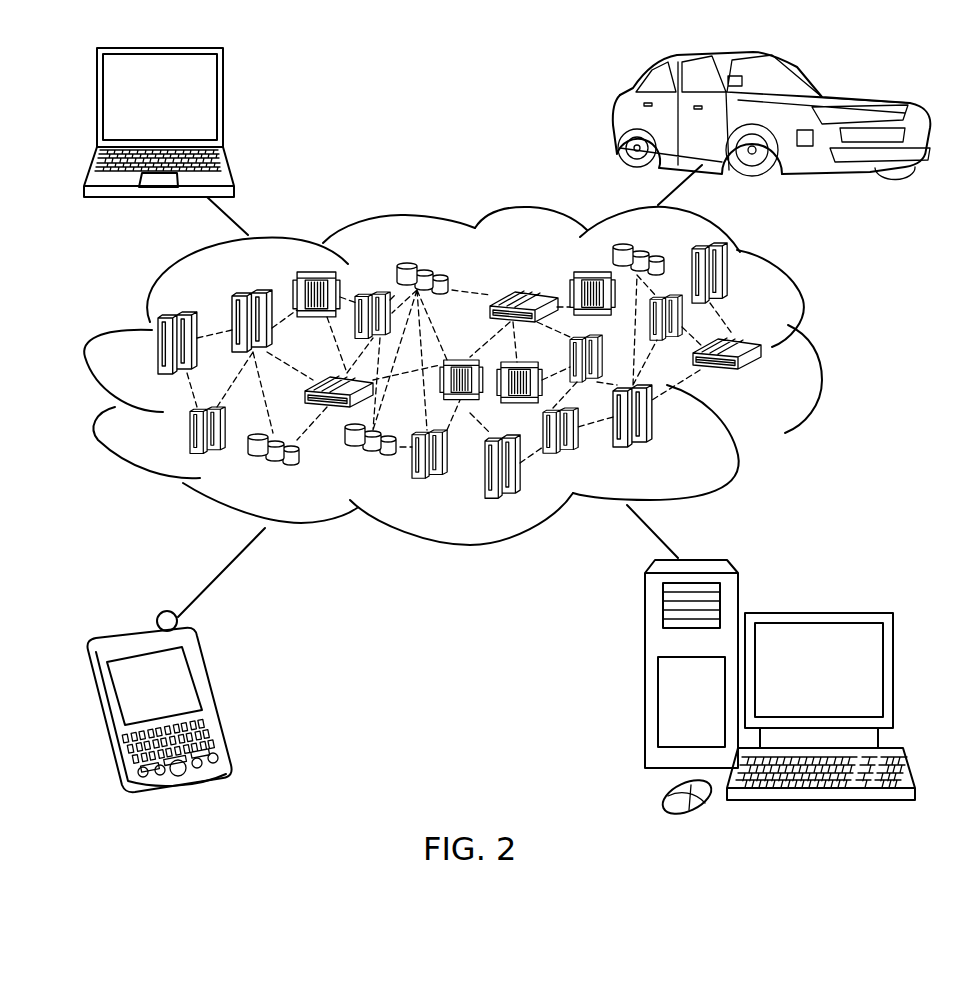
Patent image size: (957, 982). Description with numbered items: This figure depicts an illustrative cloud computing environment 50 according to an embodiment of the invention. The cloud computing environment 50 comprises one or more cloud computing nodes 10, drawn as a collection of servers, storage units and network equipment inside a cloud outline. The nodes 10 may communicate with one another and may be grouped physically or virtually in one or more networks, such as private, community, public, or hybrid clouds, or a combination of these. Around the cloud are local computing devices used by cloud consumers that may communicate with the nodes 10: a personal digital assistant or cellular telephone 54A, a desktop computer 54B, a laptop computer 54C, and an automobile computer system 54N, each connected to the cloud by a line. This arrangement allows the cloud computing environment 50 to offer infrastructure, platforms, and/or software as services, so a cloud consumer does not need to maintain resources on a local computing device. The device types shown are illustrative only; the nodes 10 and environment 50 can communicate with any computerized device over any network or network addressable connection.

The cloud computing nodes 10 is at (765, 378).
The cloud computing environment 50 is at (812, 350).
The personal digital assistant (PDA) or cellular telephone 54A is at (212, 695).
The desktop computer 54B is at (817, 613).
The laptop computer 54C is at (222, 104).
The automobile computer system 54N is at (617, 118).